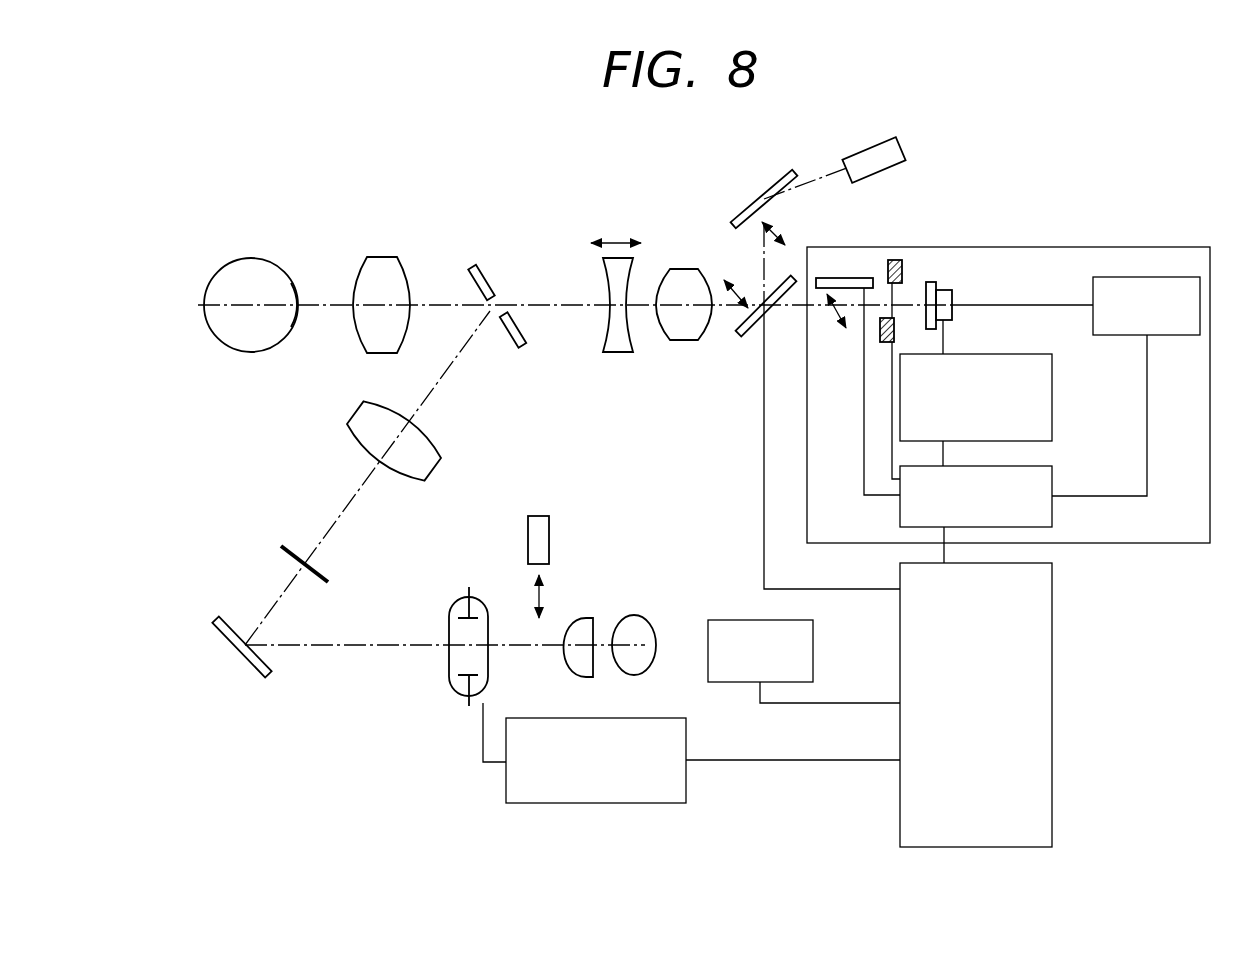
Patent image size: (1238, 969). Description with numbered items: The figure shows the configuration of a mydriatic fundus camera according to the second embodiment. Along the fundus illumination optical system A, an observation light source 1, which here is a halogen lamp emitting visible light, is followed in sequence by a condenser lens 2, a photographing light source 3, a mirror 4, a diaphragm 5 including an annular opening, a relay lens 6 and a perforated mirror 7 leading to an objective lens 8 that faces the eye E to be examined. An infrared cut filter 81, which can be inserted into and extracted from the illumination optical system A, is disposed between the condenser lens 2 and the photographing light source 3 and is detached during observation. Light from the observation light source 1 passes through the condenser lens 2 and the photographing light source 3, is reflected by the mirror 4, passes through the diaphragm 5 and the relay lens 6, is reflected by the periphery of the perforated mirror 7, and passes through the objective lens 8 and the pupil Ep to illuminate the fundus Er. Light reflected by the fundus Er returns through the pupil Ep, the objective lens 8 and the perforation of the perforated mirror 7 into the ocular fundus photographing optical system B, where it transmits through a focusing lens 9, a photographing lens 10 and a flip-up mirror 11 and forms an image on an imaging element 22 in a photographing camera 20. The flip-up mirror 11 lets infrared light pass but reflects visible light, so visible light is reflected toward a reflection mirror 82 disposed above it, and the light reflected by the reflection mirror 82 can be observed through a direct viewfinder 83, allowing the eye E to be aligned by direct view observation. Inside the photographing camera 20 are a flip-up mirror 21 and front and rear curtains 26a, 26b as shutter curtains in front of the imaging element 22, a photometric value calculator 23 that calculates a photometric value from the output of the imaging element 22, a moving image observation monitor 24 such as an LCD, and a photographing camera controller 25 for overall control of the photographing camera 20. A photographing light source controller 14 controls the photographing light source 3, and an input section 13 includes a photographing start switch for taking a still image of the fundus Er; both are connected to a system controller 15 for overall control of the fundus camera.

The observation light source 1 is at (636, 617).
The condenser lens 2 is at (586, 618).
The photographing light source 3 is at (478, 597).
The mirror 4 is at (222, 620).
The diaphragm 5 is at (325, 576).
The relay lens 6 is at (363, 403).
The perforated mirror 7 is at (473, 268).
The objective lens 8 is at (382, 258).
The focusing lens 9 is at (617, 352).
The photographing lens 10 is at (683, 340).
The flip-up mirror 11 is at (772, 310).
The input section 13 is at (814, 645).
The photographing light source controller 14 is at (505, 783).
The system controller 15 is at (1053, 620).
The photographing camera 20 is at (1076, 247).
The flip-up mirror in the photographing camera 21 is at (852, 276).
The imaging element 22 is at (953, 296).
The photometric value calculator 23 is at (1053, 383).
The moving image observation monitor 24 is at (1165, 277).
The photographing camera controller 25 is at (1053, 478).
The front curtain 26a is at (882, 342).
The rear curtain 26b is at (894, 259).
The infrared cut filter 81 is at (542, 516).
The reflection mirror 82 is at (777, 185).
The direct viewfinder 83 is at (872, 144).
The fundus illumination optical system A is at (438, 383).
The ocular fundus photographing optical system B is at (546, 303).
The eye to be examined E is at (250, 258).
The pupil Ep is at (292, 290).
The fundus Er is at (210, 330).